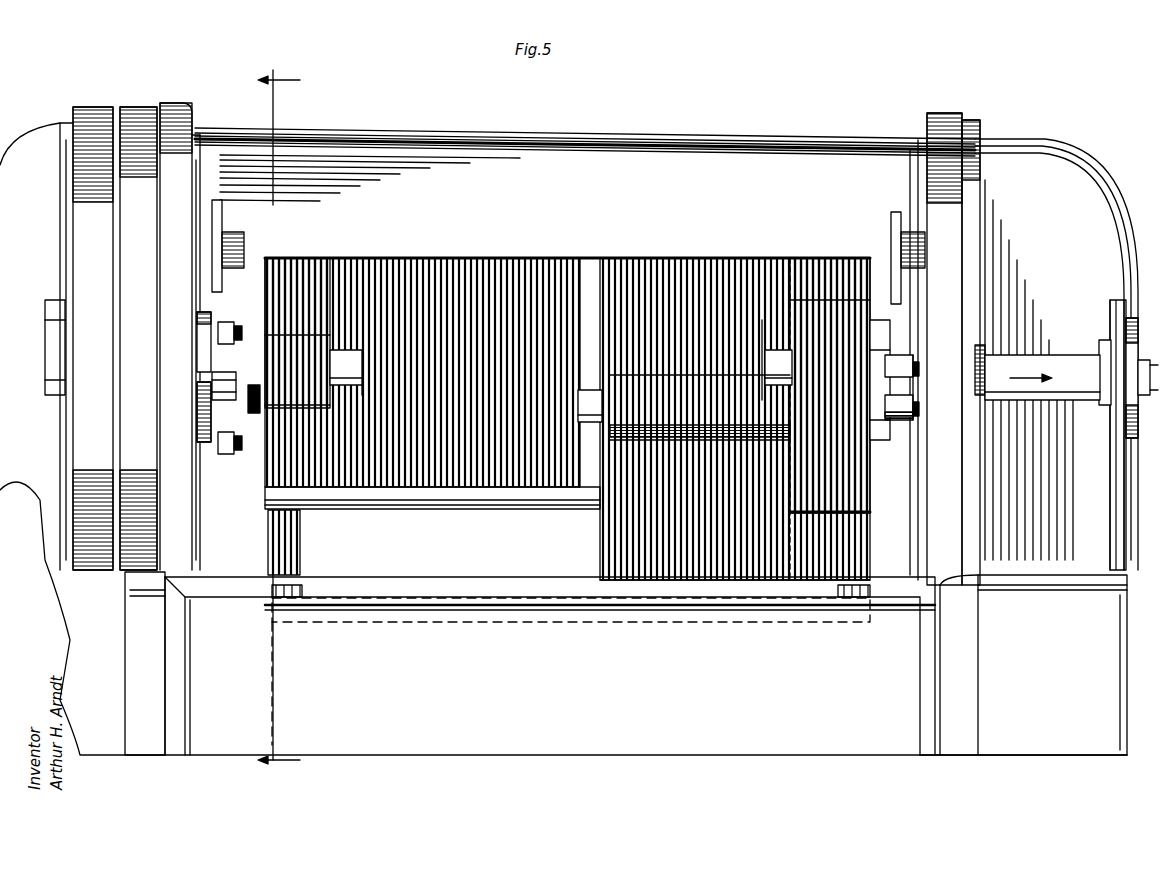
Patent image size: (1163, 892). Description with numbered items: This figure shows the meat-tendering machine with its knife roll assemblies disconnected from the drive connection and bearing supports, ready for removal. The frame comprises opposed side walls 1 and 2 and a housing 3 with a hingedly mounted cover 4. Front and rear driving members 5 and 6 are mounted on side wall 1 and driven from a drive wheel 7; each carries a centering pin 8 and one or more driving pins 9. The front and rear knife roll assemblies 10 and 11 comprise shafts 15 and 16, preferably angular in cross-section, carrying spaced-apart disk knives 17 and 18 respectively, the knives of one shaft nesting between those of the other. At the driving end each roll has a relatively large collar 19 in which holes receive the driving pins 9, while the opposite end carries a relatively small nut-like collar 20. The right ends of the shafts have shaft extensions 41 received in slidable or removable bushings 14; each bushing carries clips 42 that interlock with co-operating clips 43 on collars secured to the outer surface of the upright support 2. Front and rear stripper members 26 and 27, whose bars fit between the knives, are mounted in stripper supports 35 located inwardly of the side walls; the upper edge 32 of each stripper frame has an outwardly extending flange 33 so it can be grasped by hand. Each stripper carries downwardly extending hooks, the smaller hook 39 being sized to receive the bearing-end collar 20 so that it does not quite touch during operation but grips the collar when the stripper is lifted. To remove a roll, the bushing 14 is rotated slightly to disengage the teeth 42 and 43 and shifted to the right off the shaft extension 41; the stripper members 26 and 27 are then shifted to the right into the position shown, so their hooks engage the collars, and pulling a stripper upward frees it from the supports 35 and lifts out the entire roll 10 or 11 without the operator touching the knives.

The side wall 1 is at (190, 537).
The side wall 2 is at (912, 550).
The housing 3 is at (375, 128).
The cover 4 is at (815, 248).
The front driving member 5 is at (222, 322).
The rear driving member 6 is at (224, 480).
The drive wheel 7 is at (70, 123).
The centering pin 8 is at (240, 340).
The driving pin 9 is at (228, 332).
The front knife roll assembly 10 is at (345, 352).
The rear knife roll assembly 11 is at (700, 372).
The bushing 14 is at (1050, 355).
The shaft 15 is at (362, 385).
The shaft 16 is at (590, 425).
The disk knife 17 is at (312, 262).
The disk knife 18 is at (650, 330).
The large collar 19 is at (250, 392).
The small collar 20 is at (212, 390).
The front stripper member 26 is at (555, 152).
The rear stripper member 27 is at (400, 625).
The upper edge 32 is at (650, 133).
The flange 33 is at (740, 135).
The stripper support 35 is at (216, 200).
The hook 39 is at (913, 368).
The shaft extension 41 is at (935, 345).
The clip 42 is at (980, 350).
The clip 43 is at (985, 430).